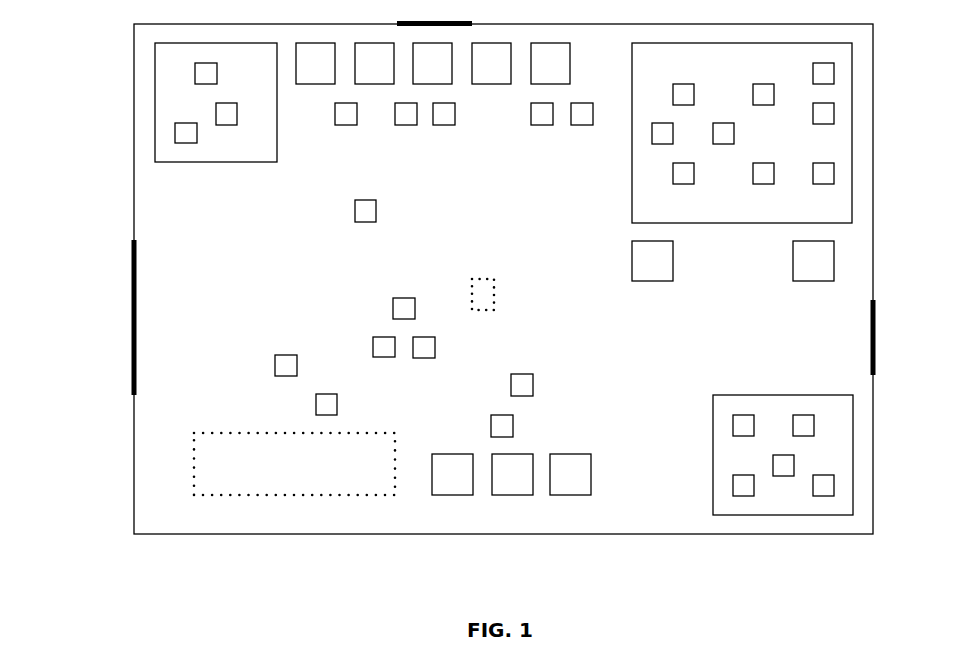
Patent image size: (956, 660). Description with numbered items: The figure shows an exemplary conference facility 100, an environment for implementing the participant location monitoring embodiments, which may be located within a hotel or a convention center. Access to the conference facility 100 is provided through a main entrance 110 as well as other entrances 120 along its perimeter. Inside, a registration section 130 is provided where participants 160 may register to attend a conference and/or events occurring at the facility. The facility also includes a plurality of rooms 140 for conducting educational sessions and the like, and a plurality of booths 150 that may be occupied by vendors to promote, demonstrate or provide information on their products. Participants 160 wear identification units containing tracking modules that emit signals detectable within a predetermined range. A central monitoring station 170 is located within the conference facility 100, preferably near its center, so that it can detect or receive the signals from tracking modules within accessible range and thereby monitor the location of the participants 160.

The conference facility 100 is at (90, 618).
The main entrance 110 is at (133, 287).
The other entrances 120 is at (873, 347).
The registration section 130 is at (194, 452).
The rooms 140 is at (632, 182).
The booths 150 is at (572, 454).
The participants 160 is at (377, 337).
The central monitoring station 170 is at (490, 280).